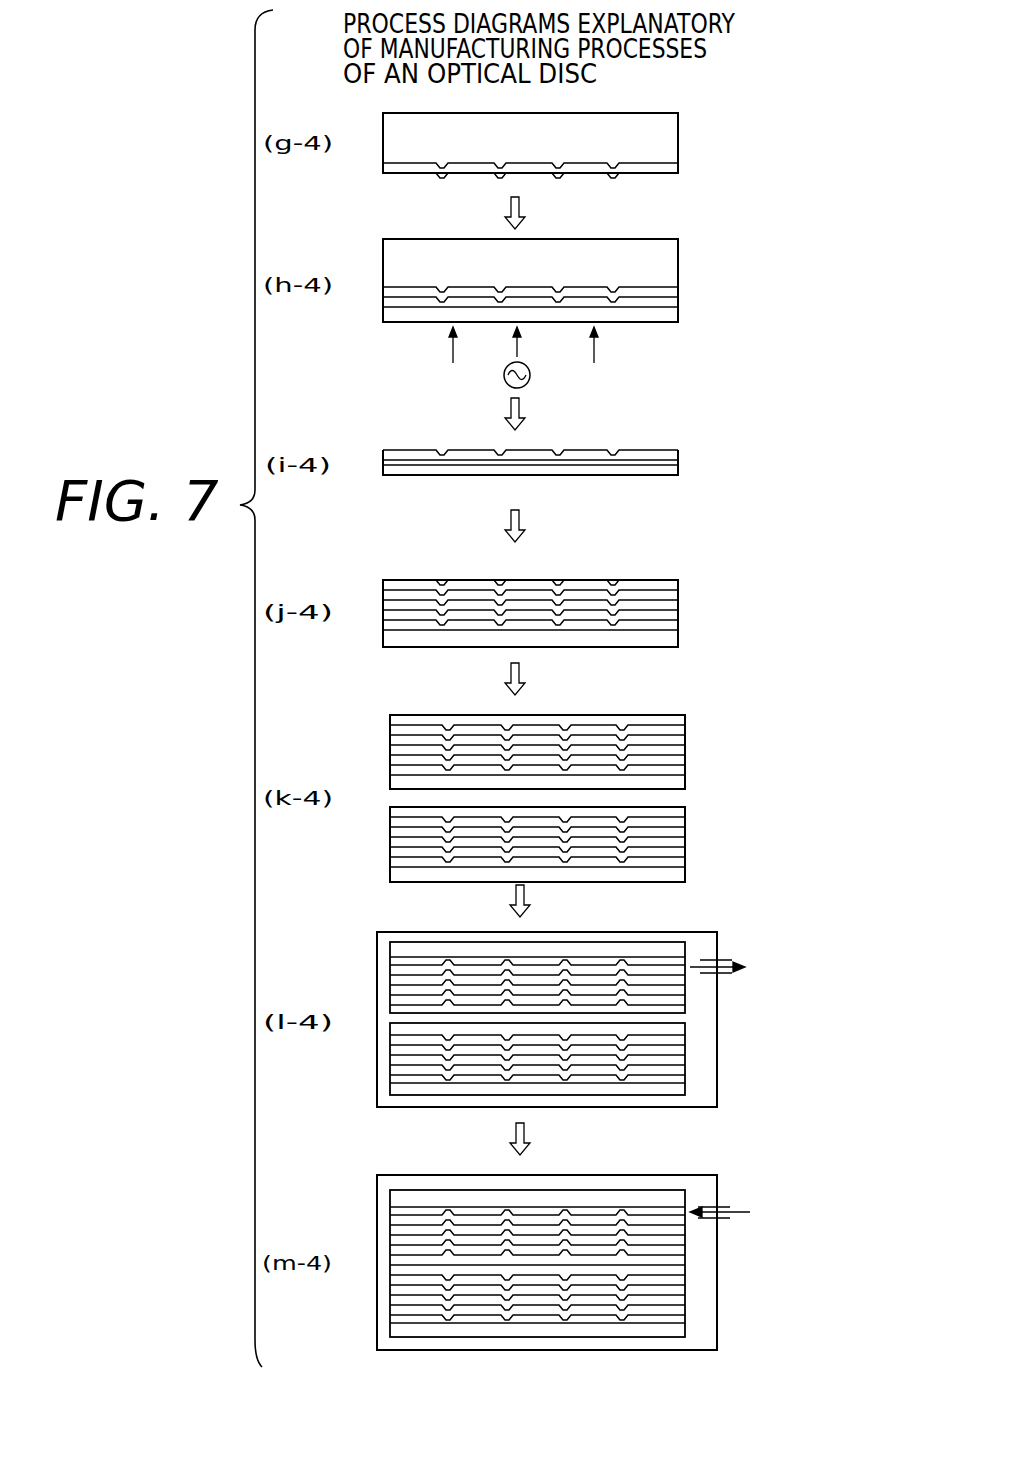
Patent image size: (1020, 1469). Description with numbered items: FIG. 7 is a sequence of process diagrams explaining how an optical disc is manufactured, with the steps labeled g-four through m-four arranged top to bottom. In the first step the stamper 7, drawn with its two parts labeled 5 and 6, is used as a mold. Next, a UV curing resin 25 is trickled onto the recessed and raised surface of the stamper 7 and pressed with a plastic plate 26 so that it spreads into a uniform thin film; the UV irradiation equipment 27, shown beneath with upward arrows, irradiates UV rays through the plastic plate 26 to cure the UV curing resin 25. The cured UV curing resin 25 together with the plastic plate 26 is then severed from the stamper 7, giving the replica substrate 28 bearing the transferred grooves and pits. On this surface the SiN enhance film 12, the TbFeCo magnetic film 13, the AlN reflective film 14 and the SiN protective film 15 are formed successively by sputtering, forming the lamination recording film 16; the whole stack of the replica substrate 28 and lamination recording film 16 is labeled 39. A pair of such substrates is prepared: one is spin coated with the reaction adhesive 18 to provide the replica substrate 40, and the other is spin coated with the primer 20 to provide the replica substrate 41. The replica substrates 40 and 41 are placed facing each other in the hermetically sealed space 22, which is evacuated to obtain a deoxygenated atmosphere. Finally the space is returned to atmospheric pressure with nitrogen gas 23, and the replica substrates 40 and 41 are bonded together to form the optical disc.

The substrate 5 is at (557, 158).
The resist layer 6 is at (665, 142).
The stamper 7 is at (573, 142).
The SiN enhance film 12 is at (567, 608).
The TbFeCo magnetic film 13 is at (665, 602).
The AlN reflective film 14 is at (665, 590).
The SiN protective film 15 is at (665, 574).
The lamination recording film 16 is at (588, 574).
The reaction adhesive 18 is at (672, 713).
The primer 20 is at (672, 810).
The hermetically sealed space 22 is at (703, 943).
The nitrogen gas 23 is at (733, 1212).
The UV curing resin 25 is at (665, 294).
The plastic plate 26 is at (665, 314).
The UV irradiation equipment 27 is at (530, 373).
The replica substrate 28 is at (748, 418).
The laminated substrate 39 is at (610, 593).
The replica substrate 40 is at (574, 734).
The replica substrate 41 is at (578, 835).